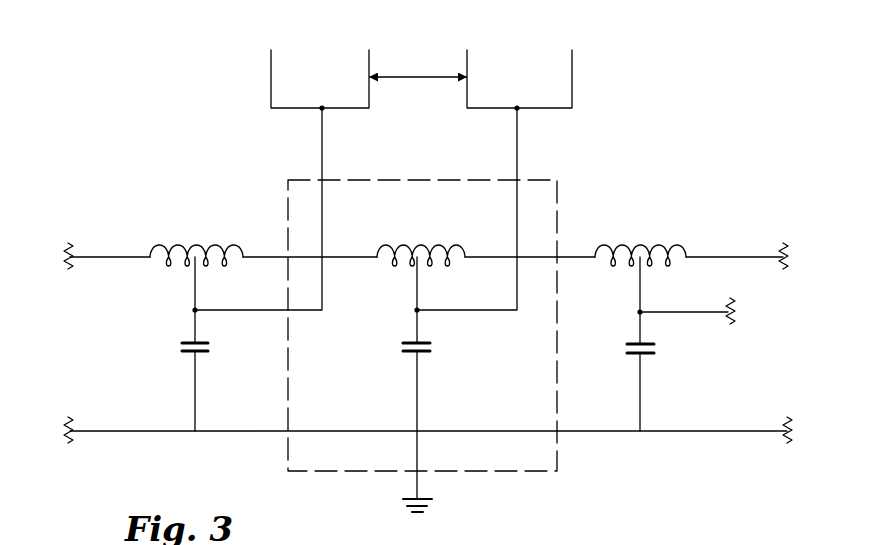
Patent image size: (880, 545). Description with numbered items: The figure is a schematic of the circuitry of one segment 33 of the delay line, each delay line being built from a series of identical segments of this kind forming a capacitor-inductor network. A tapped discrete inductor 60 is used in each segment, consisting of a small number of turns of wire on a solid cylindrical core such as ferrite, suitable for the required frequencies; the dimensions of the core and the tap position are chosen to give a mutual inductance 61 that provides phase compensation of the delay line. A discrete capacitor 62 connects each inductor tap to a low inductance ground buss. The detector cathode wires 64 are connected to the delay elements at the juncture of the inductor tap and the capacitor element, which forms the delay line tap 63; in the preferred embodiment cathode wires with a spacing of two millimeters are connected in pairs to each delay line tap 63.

The segment 33 is at (387, 478).
The tapped discrete inductor 60 is at (181, 267).
The mutual inductance 61 is at (231, 241).
The discrete capacitor 62 is at (204, 358).
The delay line tap 63 is at (188, 313).
The detector cathode wire 64 is at (418, 73).